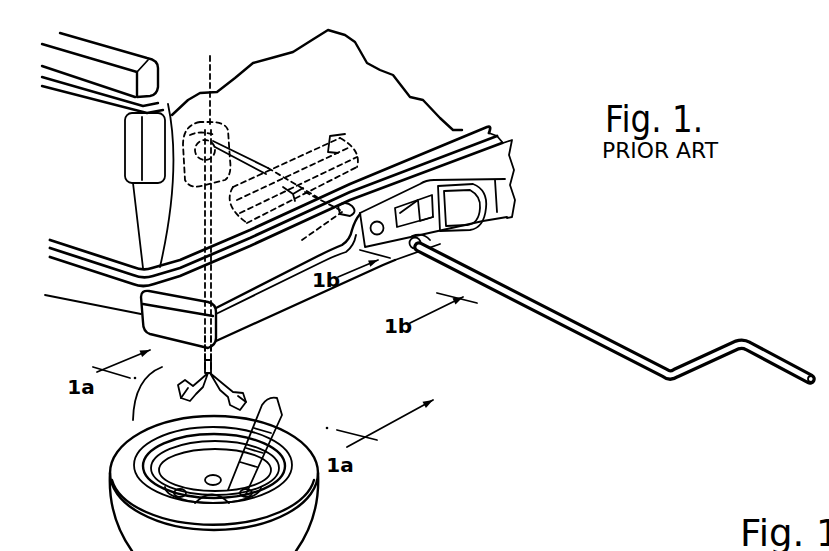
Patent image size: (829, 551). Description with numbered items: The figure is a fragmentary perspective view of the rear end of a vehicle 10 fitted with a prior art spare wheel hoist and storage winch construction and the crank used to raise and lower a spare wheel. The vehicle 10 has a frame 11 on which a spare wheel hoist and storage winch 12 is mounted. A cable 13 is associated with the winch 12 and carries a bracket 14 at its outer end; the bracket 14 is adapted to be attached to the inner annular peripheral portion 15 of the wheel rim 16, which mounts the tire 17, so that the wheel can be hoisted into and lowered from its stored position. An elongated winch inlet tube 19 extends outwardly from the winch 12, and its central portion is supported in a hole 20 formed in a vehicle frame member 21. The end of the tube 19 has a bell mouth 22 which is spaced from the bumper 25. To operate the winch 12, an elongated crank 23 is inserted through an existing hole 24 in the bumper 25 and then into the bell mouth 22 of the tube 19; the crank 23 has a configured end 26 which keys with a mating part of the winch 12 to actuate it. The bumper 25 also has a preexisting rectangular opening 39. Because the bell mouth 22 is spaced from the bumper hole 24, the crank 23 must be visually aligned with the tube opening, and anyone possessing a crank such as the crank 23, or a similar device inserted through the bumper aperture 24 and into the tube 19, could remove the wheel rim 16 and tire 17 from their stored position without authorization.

The vehicle 10 is at (112, 33).
The frame 11 is at (343, 132).
The spare wheel hoist and storage winch 12 is at (211, 45).
The cable 13 is at (224, 350).
The bracket 14 is at (238, 378).
The inner annular peripheral portion 15 is at (287, 427).
The wheel rim 16 is at (262, 415).
The tire 17 is at (312, 516).
The winch inlet tube 19 is at (243, 150).
The hole 20 is at (354, 154).
The vehicle frame member 21 is at (290, 160).
The bell mouth 22 is at (302, 240).
The crank 23 is at (566, 310).
The hole 24 is at (399, 262).
The bumper 25 is at (297, 315).
The configured end 26 is at (444, 256).
The rectangular opening 39 is at (462, 241).